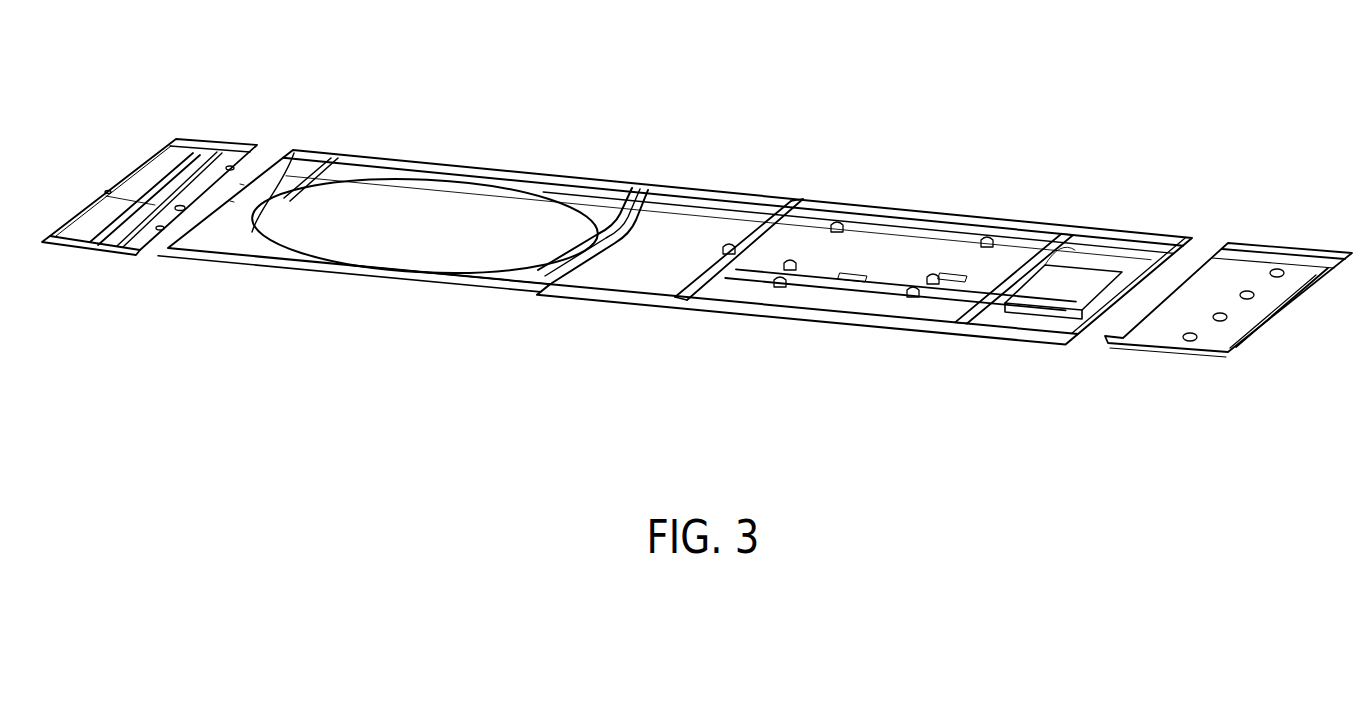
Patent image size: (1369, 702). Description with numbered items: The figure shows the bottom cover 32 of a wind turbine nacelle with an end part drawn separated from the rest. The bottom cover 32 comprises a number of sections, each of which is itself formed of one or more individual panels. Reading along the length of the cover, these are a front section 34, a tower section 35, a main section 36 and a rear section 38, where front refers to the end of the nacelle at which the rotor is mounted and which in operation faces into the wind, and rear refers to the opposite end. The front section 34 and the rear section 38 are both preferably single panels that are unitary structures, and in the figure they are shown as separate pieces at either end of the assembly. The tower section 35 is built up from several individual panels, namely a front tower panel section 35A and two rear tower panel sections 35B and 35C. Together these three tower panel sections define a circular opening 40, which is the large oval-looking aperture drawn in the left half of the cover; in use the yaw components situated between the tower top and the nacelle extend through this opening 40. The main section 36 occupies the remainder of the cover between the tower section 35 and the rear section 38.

The bottom cover 32 is at (1017, 148).
The front section 34 is at (165, 175).
The tower section 35 is at (683, 160).
The front tower panel section 35A is at (213, 247).
The rear tower panel section 35B is at (521, 272).
The rear tower panel section 35C is at (608, 215).
The main section 36 is at (1050, 355).
The rear section 38 is at (1247, 277).
The circular opening 40 is at (274, 247).